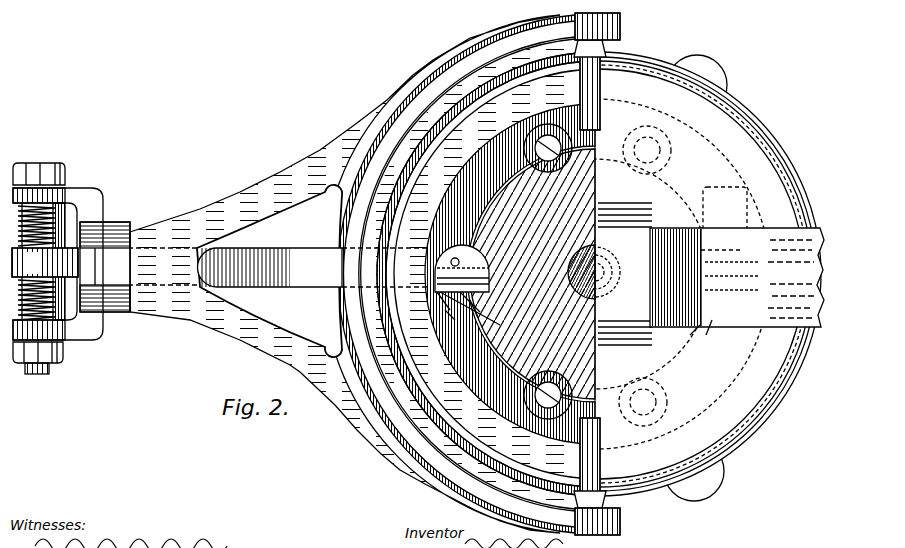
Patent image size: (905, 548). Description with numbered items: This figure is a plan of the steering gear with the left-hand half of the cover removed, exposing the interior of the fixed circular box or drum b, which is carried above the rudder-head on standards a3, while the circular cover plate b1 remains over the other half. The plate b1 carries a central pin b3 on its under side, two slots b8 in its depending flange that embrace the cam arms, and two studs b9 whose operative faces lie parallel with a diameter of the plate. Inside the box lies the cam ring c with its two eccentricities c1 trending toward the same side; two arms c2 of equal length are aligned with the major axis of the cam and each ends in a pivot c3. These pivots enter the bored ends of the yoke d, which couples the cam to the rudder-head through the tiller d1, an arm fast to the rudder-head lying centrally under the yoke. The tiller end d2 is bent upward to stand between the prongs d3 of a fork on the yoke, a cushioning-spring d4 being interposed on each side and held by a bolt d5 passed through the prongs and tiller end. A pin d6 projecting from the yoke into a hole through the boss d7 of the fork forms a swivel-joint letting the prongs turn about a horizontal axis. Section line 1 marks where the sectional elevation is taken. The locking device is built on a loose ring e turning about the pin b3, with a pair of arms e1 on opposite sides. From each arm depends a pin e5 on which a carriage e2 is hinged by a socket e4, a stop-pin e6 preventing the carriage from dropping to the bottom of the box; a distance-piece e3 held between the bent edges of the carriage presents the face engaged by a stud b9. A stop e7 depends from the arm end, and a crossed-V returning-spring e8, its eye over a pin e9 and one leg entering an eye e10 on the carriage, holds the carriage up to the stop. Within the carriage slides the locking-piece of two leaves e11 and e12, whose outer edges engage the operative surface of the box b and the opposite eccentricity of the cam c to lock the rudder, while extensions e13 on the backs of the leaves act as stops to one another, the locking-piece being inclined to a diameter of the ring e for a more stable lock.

The yoke d is at (403, 84).
The tiller d1 is at (313, 284).
The tiller end d2 is at (80, 243).
The prongs of fork d3 is at (78, 194).
The cushioning-spring d4 is at (45, 263).
The bolt d5 is at (49, 370).
The pin d6 is at (110, 303).
The boss of fork d7 is at (113, 263).
The section line 1 is at (45, 262).
The fixed circular box b is at (797, 173).
The circular plate b1 is at (766, 146).
The central pin b3 is at (595, 255).
The slots b8 is at (630, 73).
The studs b9 is at (733, 247).
The standards a3 is at (703, 73).
The cam ring c is at (676, 340).
The eccentricities of cam c1 is at (699, 233).
The cam arms c2 is at (575, 87).
The pivot c3 is at (608, 17).
The loose ring e is at (545, 274).
The arms of ring e1 is at (712, 338).
The carriage e2 is at (752, 262).
The distance-piece e3 is at (735, 275).
The socket e4 is at (490, 279).
The pin e5 is at (490, 286).
The stop-pin e6 is at (740, 292).
The stop e7 is at (442, 293).
The returning-spring e8 is at (609, 315).
The pin e9 is at (573, 338).
The eye e10 is at (445, 312).
The leaf of locking-piece e11 is at (440, 270).
The leaf of locking-piece e12 is at (470, 264).
The extensions e13 is at (495, 300).